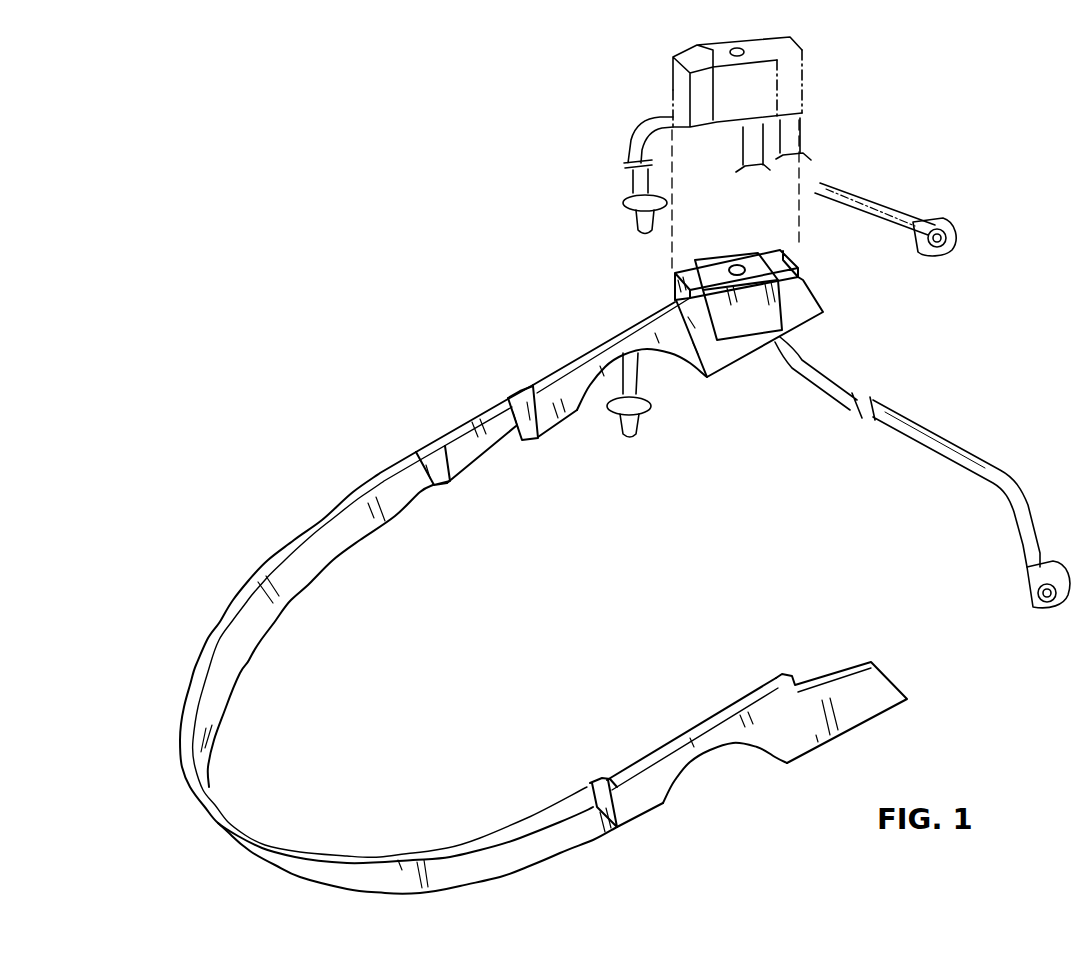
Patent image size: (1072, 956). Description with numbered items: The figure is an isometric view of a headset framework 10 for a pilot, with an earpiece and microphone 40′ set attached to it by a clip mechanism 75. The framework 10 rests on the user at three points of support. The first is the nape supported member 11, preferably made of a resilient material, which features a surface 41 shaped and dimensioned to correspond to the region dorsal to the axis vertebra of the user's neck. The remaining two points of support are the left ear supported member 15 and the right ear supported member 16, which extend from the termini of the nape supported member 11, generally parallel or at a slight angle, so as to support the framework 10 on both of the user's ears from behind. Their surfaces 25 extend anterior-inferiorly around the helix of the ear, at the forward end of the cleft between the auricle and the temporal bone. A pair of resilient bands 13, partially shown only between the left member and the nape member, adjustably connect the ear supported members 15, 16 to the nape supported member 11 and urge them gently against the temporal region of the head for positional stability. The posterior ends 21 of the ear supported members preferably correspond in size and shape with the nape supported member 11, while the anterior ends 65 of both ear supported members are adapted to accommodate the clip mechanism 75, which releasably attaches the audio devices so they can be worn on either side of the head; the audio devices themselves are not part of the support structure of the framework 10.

The framework 10 is at (434, 685).
The nape supported member 11 is at (351, 670).
The resilient bands 13 is at (466, 416).
The left ear supported member 15 is at (611, 366).
The right ear supported member 16 is at (692, 726).
The posterior ends 21 is at (549, 608).
The surfaces 25 is at (682, 594).
The microphone 40′ is at (922, 386).
The surface 41 is at (362, 858).
The anterior ends 65 is at (793, 506).
The clip mechanism 75 is at (767, 146).